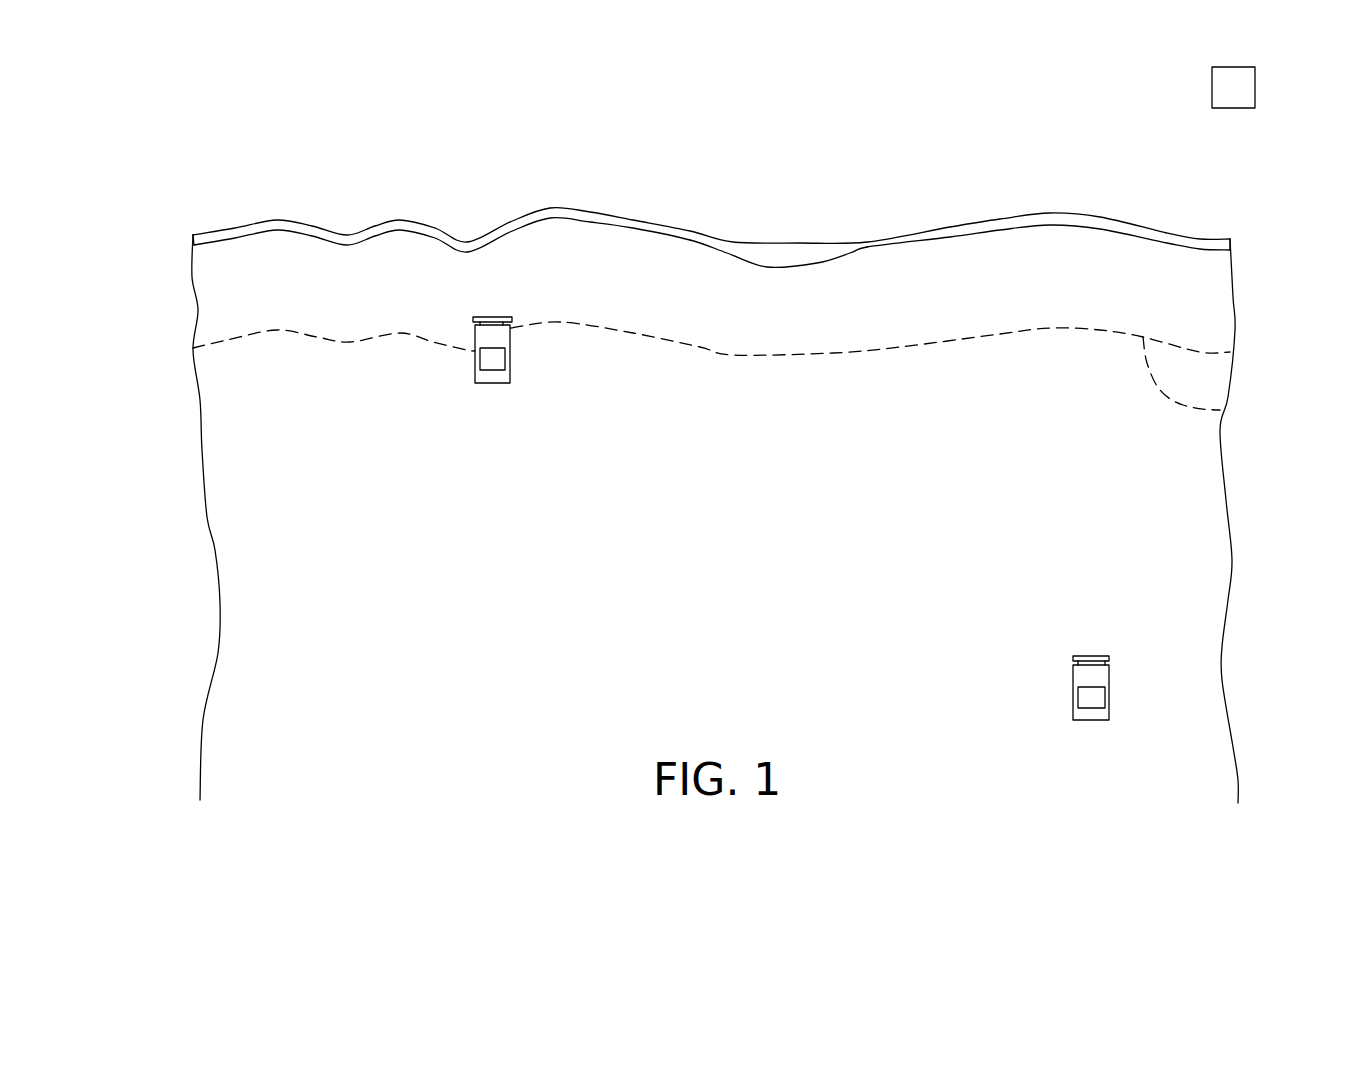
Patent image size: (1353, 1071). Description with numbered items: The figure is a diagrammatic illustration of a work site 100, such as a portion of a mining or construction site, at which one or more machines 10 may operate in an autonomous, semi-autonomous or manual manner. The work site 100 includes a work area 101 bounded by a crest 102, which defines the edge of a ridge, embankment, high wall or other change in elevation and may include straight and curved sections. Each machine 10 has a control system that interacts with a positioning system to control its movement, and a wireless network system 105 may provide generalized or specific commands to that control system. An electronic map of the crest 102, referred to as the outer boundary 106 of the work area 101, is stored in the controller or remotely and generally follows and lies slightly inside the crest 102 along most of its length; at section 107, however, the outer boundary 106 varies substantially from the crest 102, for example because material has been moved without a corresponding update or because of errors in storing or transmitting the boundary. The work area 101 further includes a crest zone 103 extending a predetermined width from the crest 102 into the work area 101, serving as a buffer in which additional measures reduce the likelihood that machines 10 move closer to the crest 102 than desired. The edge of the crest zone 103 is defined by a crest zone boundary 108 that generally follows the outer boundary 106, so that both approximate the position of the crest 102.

The work site 100 is at (166, 174).
The work area 101 is at (227, 402).
The crest 102 is at (370, 225).
The crest zone 103 is at (292, 280).
The wireless network system 105 is at (1225, 85).
The outer boundary 106 is at (493, 237).
The section 107 is at (785, 267).
The crest zone boundary 108 is at (1220, 410).
The machine 10 is at (482, 373).